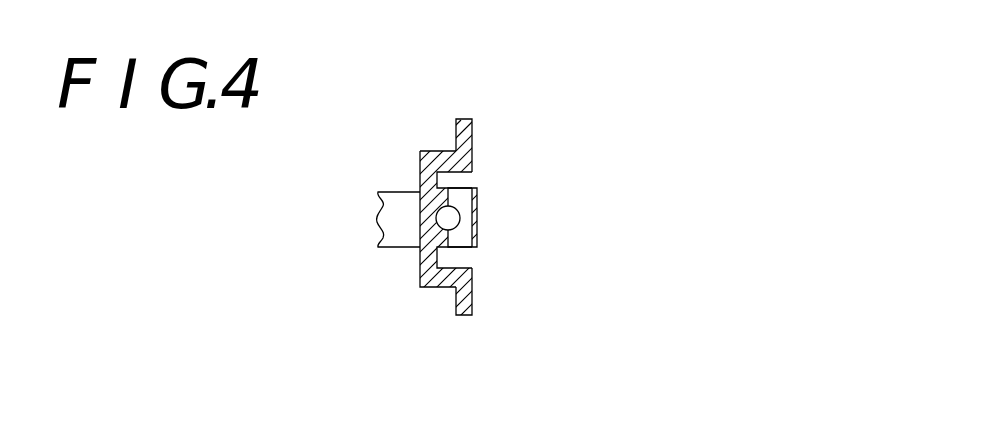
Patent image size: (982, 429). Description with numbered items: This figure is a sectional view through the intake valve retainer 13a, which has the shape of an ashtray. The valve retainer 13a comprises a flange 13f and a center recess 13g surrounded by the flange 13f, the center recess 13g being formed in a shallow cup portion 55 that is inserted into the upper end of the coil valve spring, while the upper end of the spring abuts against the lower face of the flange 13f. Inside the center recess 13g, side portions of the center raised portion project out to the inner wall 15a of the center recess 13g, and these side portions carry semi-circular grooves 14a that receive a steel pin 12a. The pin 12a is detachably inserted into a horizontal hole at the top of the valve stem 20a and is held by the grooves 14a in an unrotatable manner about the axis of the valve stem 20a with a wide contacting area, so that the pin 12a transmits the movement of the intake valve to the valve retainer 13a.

The shallow cup portion 55 is at (420, 156).
The valve retainer 13a is at (472, 137).
The flange 13f is at (473, 290).
The inner wall of the center recess 15a is at (453, 178).
The semi-circular groove 14a is at (440, 227).
The pin 12a is at (460, 211).
The center recess 13g is at (458, 261).
The valve stem 20a is at (392, 237).